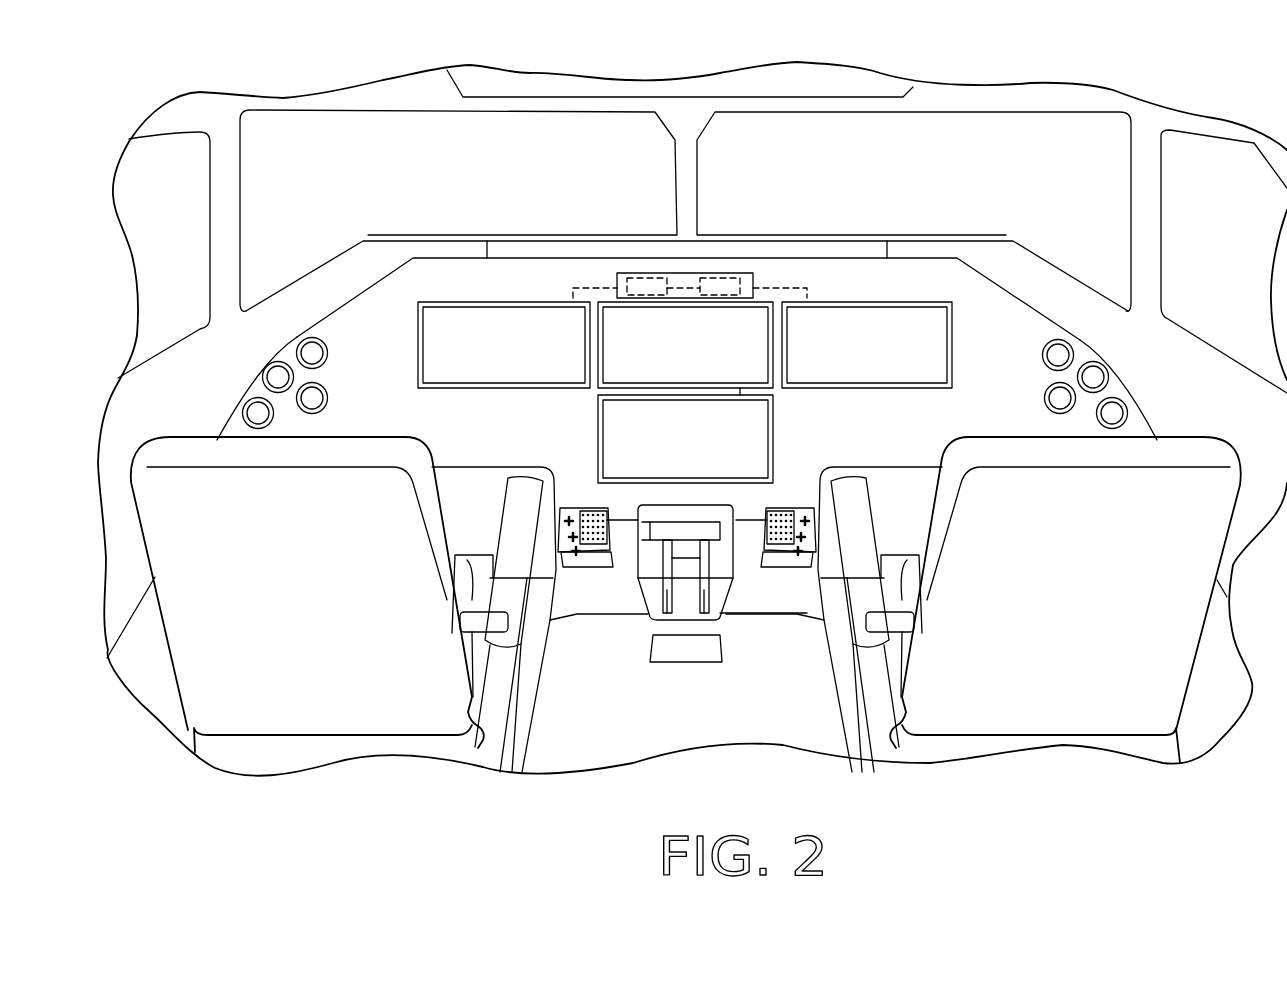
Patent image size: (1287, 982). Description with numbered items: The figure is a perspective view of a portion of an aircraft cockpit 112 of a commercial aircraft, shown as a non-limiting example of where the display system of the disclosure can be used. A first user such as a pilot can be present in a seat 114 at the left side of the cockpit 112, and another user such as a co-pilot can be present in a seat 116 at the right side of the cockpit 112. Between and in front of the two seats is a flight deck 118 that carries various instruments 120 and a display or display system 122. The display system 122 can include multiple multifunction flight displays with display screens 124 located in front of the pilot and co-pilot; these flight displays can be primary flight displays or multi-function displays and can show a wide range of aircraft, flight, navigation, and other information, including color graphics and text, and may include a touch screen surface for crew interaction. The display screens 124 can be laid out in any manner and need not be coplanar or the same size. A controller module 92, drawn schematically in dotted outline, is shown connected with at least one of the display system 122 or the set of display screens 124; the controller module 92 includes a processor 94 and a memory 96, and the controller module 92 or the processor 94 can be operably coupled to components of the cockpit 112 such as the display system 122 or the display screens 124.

The aircraft cockpit 112 is at (383, 82).
The seat 114 is at (248, 683).
The seat 116 is at (1075, 693).
The flight deck 118 is at (288, 330).
The instruments 120 is at (258, 413).
The display system 122 is at (670, 283).
The display screens 124 is at (502, 333).
The controller module 92 is at (747, 273).
The processor 94 is at (635, 273).
The memory 96 is at (715, 273).